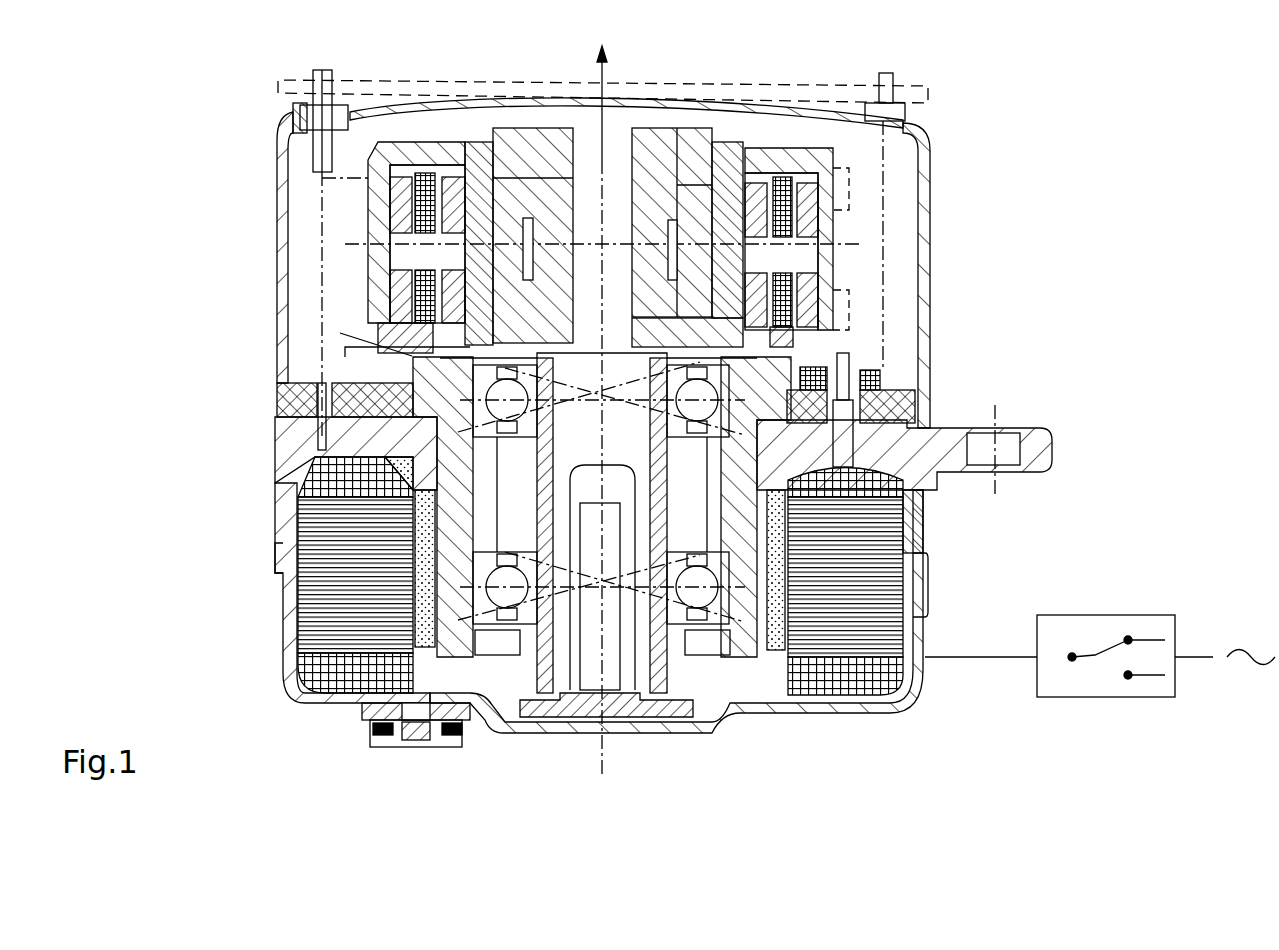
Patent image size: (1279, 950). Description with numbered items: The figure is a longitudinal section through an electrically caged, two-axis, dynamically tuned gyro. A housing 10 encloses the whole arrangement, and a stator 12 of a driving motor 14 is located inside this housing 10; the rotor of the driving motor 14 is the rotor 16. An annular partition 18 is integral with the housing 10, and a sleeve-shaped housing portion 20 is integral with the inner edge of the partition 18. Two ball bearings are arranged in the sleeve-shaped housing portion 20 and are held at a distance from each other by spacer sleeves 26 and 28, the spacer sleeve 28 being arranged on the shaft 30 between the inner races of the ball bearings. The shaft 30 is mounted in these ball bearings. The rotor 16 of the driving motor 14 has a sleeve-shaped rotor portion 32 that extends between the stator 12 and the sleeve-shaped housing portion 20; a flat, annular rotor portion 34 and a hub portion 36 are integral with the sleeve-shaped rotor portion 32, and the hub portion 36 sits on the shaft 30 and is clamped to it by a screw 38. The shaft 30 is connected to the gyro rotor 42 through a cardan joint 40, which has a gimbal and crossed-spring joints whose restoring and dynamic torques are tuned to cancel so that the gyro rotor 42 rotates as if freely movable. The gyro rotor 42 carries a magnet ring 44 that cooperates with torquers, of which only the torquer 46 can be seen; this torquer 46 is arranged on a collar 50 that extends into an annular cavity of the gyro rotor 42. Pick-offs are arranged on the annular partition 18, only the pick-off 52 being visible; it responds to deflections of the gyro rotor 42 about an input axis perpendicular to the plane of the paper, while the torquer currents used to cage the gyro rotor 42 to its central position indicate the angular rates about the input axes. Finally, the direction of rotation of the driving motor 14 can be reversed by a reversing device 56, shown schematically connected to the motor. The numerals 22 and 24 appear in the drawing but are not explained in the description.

The housing 10 is at (280, 465).
The stator 12 is at (292, 668).
The driving motor 14 is at (400, 742).
The rotor 16 is at (300, 590).
The annular partition 18 is at (370, 433).
The sleeve-shaped housing portion 20 is at (923, 515).
The cover plate 22 is at (350, 332).
The housing wall 24 is at (925, 578).
The spacer sleeve 26 is at (923, 487).
The spacer sleeve 28 is at (940, 430).
The shaft 30 is at (700, 350).
The sleeve-shaped rotor portion 32 is at (284, 560).
The flat annular rotor portion 34 is at (700, 657).
The hub portion 36 is at (505, 700).
The screw 38 is at (585, 707).
The cardan joint 40 is at (657, 143).
The gyro rotor 42 is at (788, 152).
The magnet ring 44 is at (850, 176).
The torquer 46 is at (793, 300).
The collar 50 is at (787, 262).
The pick-off 52 is at (852, 374).
The reversing device 56 is at (1115, 630).